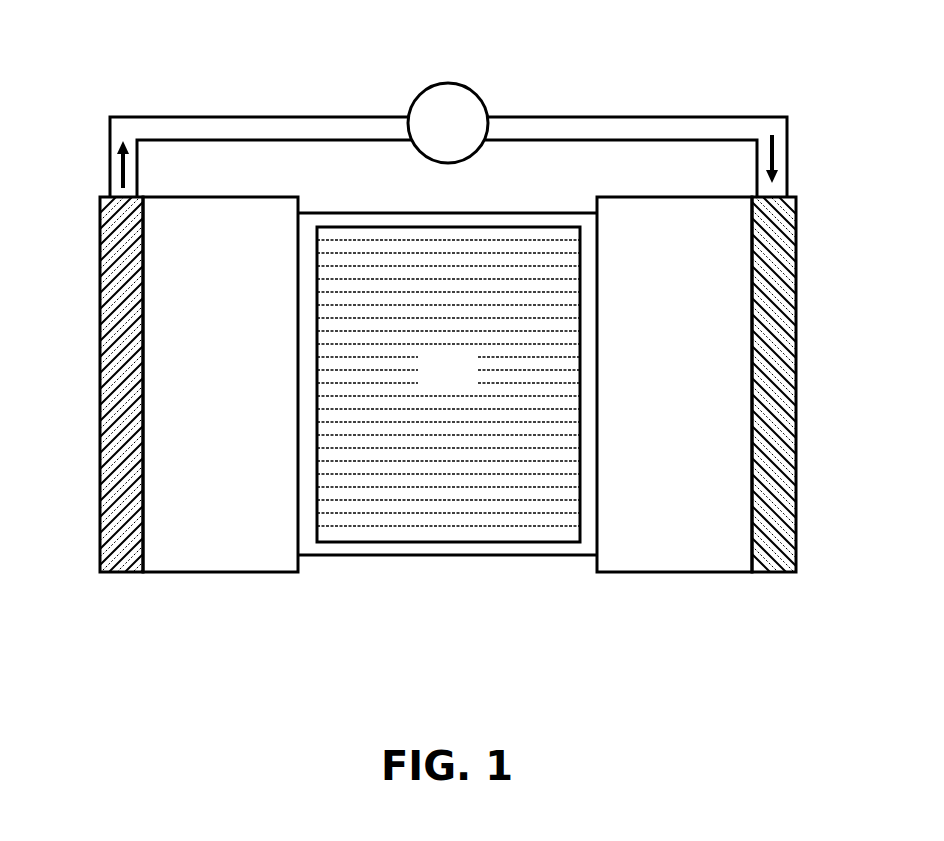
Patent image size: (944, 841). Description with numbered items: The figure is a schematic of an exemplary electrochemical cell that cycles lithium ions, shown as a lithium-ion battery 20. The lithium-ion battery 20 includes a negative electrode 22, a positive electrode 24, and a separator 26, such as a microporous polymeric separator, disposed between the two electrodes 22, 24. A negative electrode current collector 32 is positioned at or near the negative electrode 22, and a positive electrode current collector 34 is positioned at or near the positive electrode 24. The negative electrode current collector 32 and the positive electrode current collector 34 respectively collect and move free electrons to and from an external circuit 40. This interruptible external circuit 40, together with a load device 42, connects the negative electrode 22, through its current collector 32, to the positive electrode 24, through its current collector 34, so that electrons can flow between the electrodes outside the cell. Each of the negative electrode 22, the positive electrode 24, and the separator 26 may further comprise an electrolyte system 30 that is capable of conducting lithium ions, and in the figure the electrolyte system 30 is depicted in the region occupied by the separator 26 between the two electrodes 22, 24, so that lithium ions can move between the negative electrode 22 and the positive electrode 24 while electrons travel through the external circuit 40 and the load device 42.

The lithium-ion battery 20 is at (110, 60).
The negative electrode 22 is at (206, 351).
The positive electrode 24 is at (665, 346).
The separator 26 is at (447, 556).
The electrolyte system 30 is at (436, 381).
The negative electrode current collector 32 is at (100, 276).
The positive electrode current collector 34 is at (797, 275).
The external circuit 40 is at (262, 116).
The load device 42 is at (436, 134).